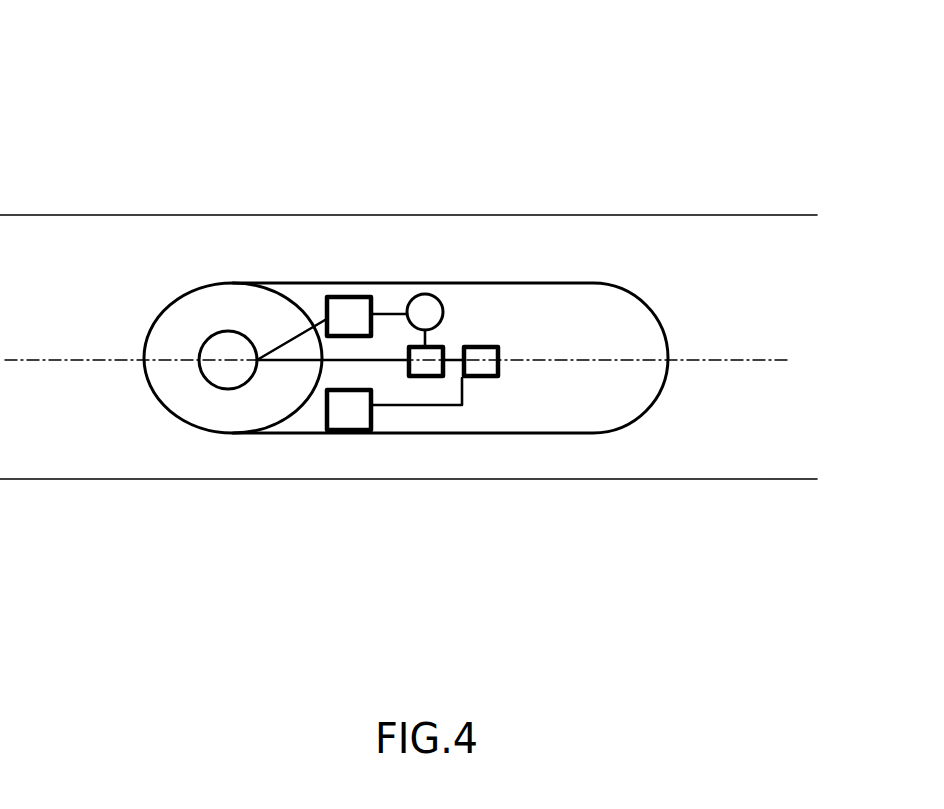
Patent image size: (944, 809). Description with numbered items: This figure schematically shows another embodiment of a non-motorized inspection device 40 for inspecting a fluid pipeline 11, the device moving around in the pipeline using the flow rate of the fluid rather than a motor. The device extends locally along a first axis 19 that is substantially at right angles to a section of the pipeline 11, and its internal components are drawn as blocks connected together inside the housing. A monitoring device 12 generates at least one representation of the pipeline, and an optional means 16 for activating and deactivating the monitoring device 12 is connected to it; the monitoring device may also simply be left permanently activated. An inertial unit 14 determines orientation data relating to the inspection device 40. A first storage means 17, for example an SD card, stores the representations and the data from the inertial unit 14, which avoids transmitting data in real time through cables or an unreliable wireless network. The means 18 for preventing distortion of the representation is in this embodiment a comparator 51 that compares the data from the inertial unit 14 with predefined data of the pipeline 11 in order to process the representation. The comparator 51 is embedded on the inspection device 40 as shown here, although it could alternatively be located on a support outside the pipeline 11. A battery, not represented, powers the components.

The non-motorized inspection device 40 is at (141, 44).
The fluid pipeline 11 is at (587, 215).
The first axis 19 is at (731, 358).
The comparator 51 is at (338, 423).
The monitoring device 12 is at (225, 353).
The means for activating/deactivating the monitoring device 16 is at (350, 300).
The means for preventing distortion 18 is at (362, 423).
The first storage means 17 is at (427, 373).
The inertial unit 14 is at (483, 368).